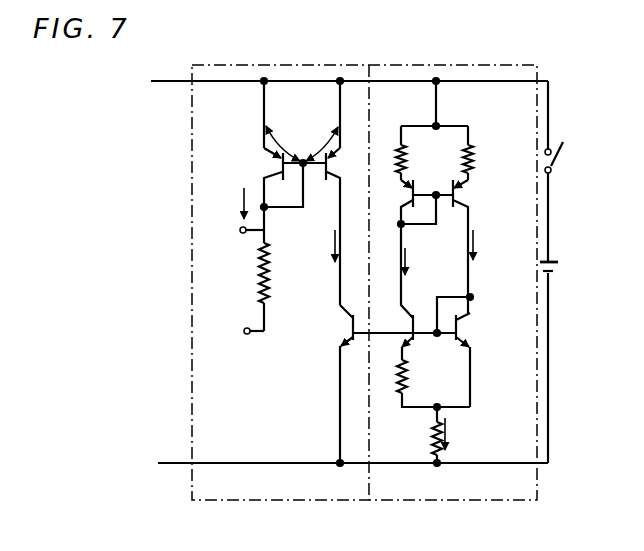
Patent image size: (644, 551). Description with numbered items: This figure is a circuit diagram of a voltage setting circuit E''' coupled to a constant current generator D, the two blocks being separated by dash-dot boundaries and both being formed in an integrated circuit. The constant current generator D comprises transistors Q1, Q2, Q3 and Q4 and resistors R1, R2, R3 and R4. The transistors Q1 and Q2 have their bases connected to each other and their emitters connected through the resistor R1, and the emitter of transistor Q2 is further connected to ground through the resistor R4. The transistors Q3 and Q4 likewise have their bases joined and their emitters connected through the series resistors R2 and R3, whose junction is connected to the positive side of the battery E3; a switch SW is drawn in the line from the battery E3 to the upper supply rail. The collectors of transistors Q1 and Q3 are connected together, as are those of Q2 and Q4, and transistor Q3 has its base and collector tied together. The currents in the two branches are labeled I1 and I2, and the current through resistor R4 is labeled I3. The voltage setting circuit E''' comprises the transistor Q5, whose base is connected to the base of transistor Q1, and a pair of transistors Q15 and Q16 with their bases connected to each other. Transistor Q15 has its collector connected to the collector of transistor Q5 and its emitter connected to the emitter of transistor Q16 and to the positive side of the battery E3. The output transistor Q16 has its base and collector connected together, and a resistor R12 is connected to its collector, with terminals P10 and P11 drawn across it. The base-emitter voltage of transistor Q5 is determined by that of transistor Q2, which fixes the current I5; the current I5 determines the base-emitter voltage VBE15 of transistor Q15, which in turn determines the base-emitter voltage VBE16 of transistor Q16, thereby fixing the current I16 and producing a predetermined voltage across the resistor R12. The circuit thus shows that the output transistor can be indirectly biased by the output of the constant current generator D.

The base-emitter voltage of transistor Q15 VBE15 is at (336, 120).
The base-emitter voltage of transistor Q16 VBE16 is at (297, 139).
The output transistor Q16 is at (270, 156).
The transistor Q15 is at (333, 157).
The current I16 is at (224, 203).
The terminal P10 is at (240, 233).
The terminal P11 is at (244, 334).
The resistor R12 is at (268, 266).
The current I5 is at (320, 246).
The output transistor Q5 is at (344, 325).
The transistor Q3 is at (408, 187).
The transistor Q4 is at (462, 188).
The resistor R2 is at (405, 150).
The resistor R3 is at (472, 152).
The current through transistor Q1 I1 is at (415, 264).
The current through transistor Q2 I2 is at (483, 250).
The transistor Q1 is at (406, 340).
The transistor Q2 is at (464, 322).
The resistor R1 is at (406, 372).
The resistor R4 is at (432, 431).
The current through resistor R4 I3 is at (455, 435).
The switch SW is at (570, 160).
The battery E3 is at (561, 270).
The voltage setting circuit E''' is at (278, 518).
The constant current generator D is at (420, 489).